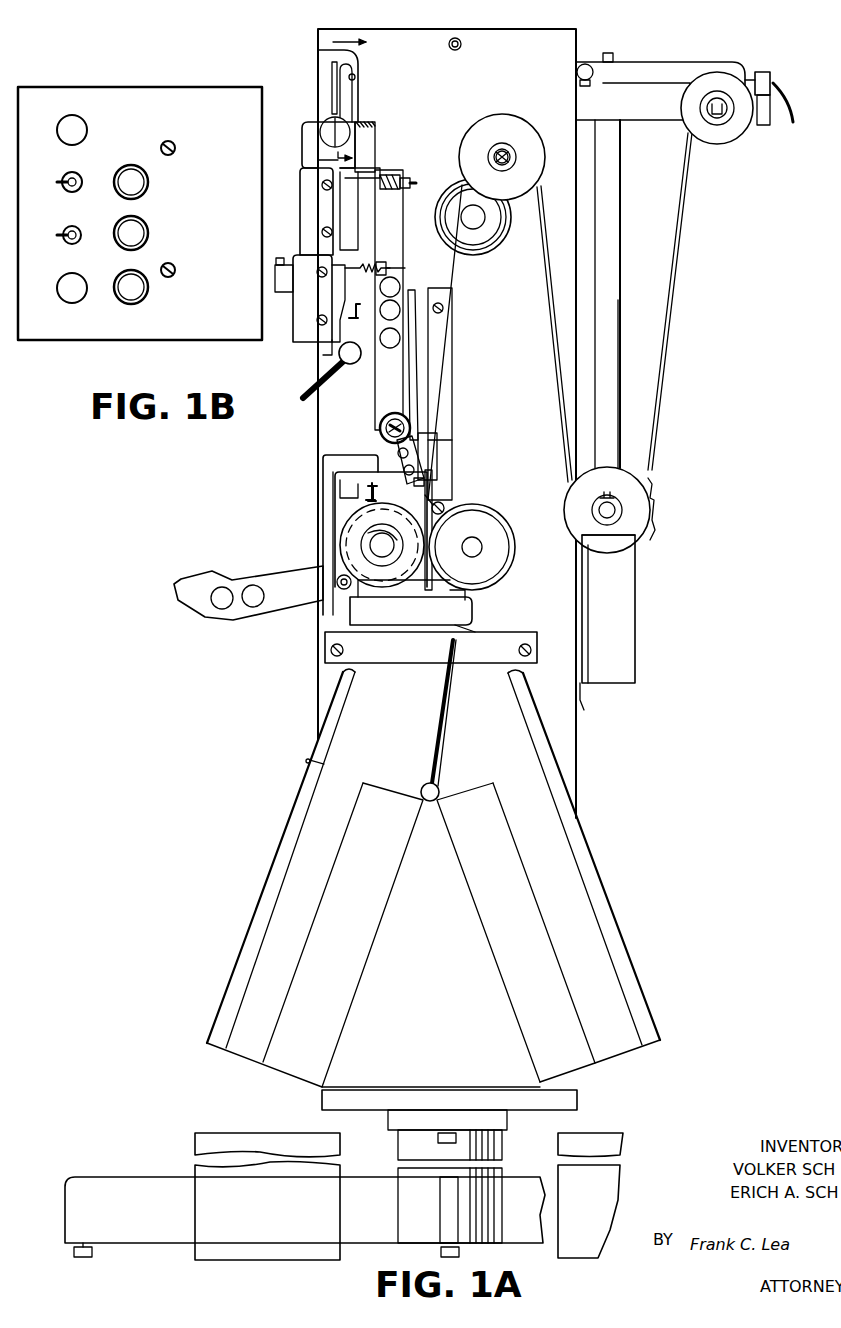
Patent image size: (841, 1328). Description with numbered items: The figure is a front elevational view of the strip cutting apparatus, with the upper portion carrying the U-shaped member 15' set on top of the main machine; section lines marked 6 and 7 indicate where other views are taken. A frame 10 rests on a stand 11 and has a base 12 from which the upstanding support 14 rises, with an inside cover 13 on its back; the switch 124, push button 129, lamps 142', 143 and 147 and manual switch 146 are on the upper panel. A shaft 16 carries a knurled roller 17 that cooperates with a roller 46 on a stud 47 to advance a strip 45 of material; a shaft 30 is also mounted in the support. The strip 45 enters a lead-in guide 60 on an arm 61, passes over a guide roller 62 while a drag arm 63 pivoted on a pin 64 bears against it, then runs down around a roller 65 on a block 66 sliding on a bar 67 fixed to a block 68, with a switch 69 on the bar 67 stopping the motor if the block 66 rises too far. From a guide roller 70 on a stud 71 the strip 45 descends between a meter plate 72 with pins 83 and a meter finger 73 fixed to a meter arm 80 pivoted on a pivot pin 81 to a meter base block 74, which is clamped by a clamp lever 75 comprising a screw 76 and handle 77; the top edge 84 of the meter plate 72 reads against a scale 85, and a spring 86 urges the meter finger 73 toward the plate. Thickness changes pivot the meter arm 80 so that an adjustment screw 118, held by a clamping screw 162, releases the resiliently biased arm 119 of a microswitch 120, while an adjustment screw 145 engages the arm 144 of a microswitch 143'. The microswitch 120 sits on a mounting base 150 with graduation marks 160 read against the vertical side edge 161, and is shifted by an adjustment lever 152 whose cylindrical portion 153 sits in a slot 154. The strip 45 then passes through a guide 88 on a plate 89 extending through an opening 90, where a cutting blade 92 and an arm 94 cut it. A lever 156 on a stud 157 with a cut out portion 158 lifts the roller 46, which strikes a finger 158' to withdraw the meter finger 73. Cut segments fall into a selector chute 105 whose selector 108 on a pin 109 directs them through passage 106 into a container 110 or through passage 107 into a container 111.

In FIG. 1A, the section line 6 is at (360, 98).
In FIG. 1A, the section line 7 is at (363, 402).
In FIG. 1A, the frame 10 is at (312, 688).
In FIG. 1A, the stand 11 is at (128, 1172).
In FIG. 1A, the base 12 is at (580, 1097).
In FIG. 1A, the inside cover 13 is at (332, 50).
In FIG. 1A, the upstanding support 14 is at (578, 232).
In FIG. 1B, the U-shaped member 15' is at (140, 226).
In FIG. 1A, the shaft 16 is at (478, 540).
In FIG. 1A, the knurled roller 17 is at (506, 575).
In FIG. 1A, the shaft 30 is at (470, 222).
In FIG. 1A, the strip of material 45 is at (678, 240).
In FIG. 1A, the roller 46 is at (368, 520).
In FIG. 1A, the stud 47 is at (380, 542).
In FIG. 1A, the lead-in guide 60 is at (770, 72).
In FIG. 1A, the arm 61 is at (772, 126).
In FIG. 1A, the guide roller 62 is at (724, 135).
In FIG. 1A, the drag arm 63 is at (648, 62).
In FIG. 1A, the pin 64 is at (590, 62).
In FIG. 1A, the roller 65 is at (615, 553).
In FIG. 1A, the block 66 is at (622, 620).
In FIG. 1A, the bar 67 is at (620, 395).
In FIG. 1A, the block 68 is at (582, 690).
In FIG. 1A, the switch 69 is at (650, 478).
In FIG. 1A, the guide roller 70 is at (522, 205).
In FIG. 1A, the stud 71 is at (498, 156).
In FIG. 1A, the meter plate 72 is at (437, 470).
In FIG. 1A, the meter finger 73 is at (407, 450).
In FIG. 1A, the meter base block 74 is at (420, 300).
In FIG. 1A, the clamp lever 75 is at (298, 392).
In FIG. 1A, the screw 76 is at (355, 364).
In FIG. 1A, the handle 77 is at (312, 384).
In FIG. 1A, the meter arm 80 is at (395, 225).
In FIG. 1A, the pivot pin 81 is at (388, 436).
In FIG. 1A, the pins 83 is at (440, 500).
In FIG. 1A, the top edge 84 is at (432, 440).
In FIG. 1A, the scale 85 is at (452, 444).
In FIG. 1A, the spring 86 is at (290, 266).
In FIG. 1A, the guide 88 is at (428, 632).
In FIG. 1A, the plate 89 is at (463, 630).
In FIG. 1A, the opening 90 is at (472, 618).
In FIG. 1A, the cutting blade 92 is at (462, 596).
In FIG. 1A, the arm 94 is at (360, 600).
In FIG. 1A, the selector chute 105 is at (598, 858).
In FIG. 1A, the passage 106 is at (262, 968).
In FIG. 1A, the passage 107 is at (603, 956).
In FIG. 1A, the selector 108 is at (445, 745).
In FIG. 1A, the pin 109 is at (438, 800).
In FIG. 1A, the container 110 is at (252, 1133).
In FIG. 1A, the container 111 is at (604, 1133).
In FIG. 1A, the adjustment screw 118 is at (404, 190).
In FIG. 1A, the resiliently biased arm 119 is at (366, 170).
In FIG. 1A, the microswitch 120 is at (300, 180).
In FIG. 1B, the switch 124 is at (62, 163).
In FIG. 1B, the push button 129 is at (67, 292).
In FIG. 1B, the lamp 142' is at (151, 297).
In FIG. 1B, the lamp 143 is at (154, 182).
In FIG. 1A, the microswitch 143' is at (282, 352).
In FIG. 1A, the resiliently biased arm 144 is at (345, 282).
In FIG. 1A, the adjustment screw 145 is at (404, 272).
In FIG. 1B, the manual switch 146 is at (62, 215).
In FIG. 1B, the lamp 147 is at (136, 228).
In FIG. 1A, the mounting base 150 is at (302, 134).
In FIG. 1A, the adjustment lever 152 is at (332, 72).
In FIG. 1A, the cylindrical shaped portion 153 is at (320, 150).
In FIG. 1A, the slot 154 is at (326, 124).
In FIG. 1A, the lever 156 is at (228, 618).
In FIG. 1A, the stud 157 is at (336, 576).
In FIG. 1A, the cut out portion 158 is at (345, 529).
In FIG. 1A, the finger 158' is at (320, 535).
In FIG. 1A, the graduation marks 160 is at (350, 128).
In FIG. 1A, the vertical side edge 161 is at (356, 82).
In FIG. 1A, the clamping screw 162 is at (395, 178).